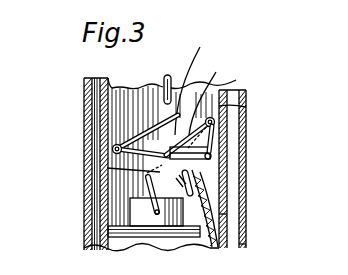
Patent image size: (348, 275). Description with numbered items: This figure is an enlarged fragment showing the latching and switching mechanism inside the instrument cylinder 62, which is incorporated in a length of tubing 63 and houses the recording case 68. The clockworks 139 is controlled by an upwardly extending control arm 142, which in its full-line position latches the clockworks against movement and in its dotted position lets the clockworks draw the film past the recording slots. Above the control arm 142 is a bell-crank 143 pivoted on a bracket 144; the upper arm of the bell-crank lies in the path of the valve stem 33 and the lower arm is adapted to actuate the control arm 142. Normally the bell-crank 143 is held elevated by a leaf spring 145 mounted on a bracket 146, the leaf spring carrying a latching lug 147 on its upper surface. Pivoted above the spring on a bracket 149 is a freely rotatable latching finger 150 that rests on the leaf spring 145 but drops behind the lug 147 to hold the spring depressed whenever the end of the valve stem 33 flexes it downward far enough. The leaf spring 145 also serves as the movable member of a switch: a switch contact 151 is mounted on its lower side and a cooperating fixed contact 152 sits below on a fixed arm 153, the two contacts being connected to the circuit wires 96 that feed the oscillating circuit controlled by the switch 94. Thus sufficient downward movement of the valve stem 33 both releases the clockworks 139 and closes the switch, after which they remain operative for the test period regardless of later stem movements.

The valve stem 33 is at (163, 88).
The bell-crank 143 is at (128, 128).
The bracket 144 is at (114, 146).
The switch contact 151 is at (115, 160).
The fixed contact 152 is at (107, 168).
The control arm 142 is at (148, 186).
The clockworks 139 is at (137, 217).
The recording case 68 is at (123, 237).
The leaf spring 145 is at (195, 83).
The latching finger 150 is at (214, 93).
The latching lug 147 is at (187, 80).
The bracket 149 is at (246, 107).
The bracket 146 is at (246, 132).
The switch 94 is at (227, 152).
The fixed arm 153 is at (210, 170).
The wires 96 is at (207, 182).
The instrument cylinder 62 is at (224, 214).
The tubing 63 is at (242, 244).